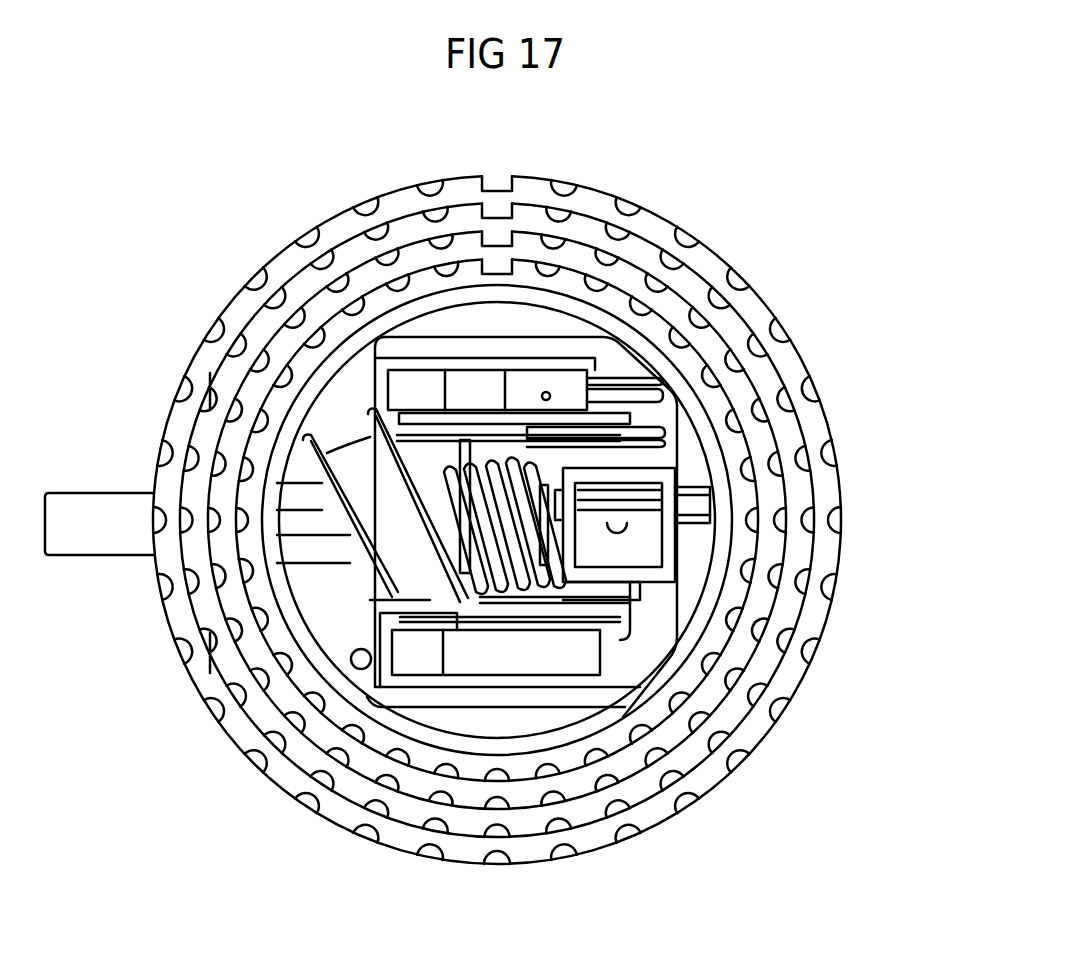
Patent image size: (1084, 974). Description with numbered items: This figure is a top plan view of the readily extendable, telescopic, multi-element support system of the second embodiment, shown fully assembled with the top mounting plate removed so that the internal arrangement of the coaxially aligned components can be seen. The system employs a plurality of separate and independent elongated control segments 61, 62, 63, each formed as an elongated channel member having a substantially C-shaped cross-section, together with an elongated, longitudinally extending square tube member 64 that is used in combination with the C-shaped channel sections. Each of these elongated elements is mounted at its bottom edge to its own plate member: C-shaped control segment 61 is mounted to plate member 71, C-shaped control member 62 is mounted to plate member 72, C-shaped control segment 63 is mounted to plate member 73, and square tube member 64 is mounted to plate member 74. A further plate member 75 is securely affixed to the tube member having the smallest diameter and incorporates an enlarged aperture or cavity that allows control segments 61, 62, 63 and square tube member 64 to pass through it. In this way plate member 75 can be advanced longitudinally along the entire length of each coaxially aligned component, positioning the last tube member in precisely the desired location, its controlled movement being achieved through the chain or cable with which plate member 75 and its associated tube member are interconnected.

The control segment 61 is at (487, 677).
The control segment 62 is at (607, 627).
The control segment 63 is at (628, 600).
The square tube member 64 is at (667, 575).
The plate member 71 is at (843, 522).
The plate member 72 is at (790, 360).
The plate member 73 is at (727, 313).
The plate member 74 is at (670, 283).
The plate member 75 is at (605, 297).